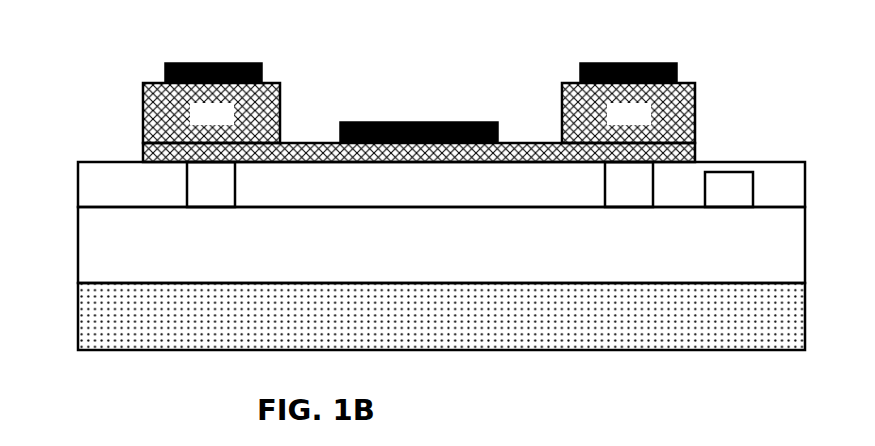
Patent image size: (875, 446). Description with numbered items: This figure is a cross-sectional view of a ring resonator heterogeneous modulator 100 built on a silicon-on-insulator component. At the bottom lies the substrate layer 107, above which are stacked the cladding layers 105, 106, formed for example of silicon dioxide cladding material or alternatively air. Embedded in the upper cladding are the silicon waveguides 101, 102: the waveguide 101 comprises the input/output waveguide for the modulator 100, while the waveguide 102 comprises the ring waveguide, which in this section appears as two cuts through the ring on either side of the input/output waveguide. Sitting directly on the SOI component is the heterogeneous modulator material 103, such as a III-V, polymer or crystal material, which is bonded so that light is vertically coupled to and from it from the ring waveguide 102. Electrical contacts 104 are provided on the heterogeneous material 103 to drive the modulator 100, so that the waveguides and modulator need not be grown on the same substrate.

The modulator 100 is at (669, 401).
The input/output waveguide 101 is at (729, 189).
The ring waveguide 102 is at (420, 184).
The heterogeneous modulator material 103 is at (419, 113).
The electrical contacts 104 is at (570, 63).
The cladding layer 105 is at (441, 184).
The cladding layer 106 is at (441, 245).
The substrate layer 107 is at (441, 316).